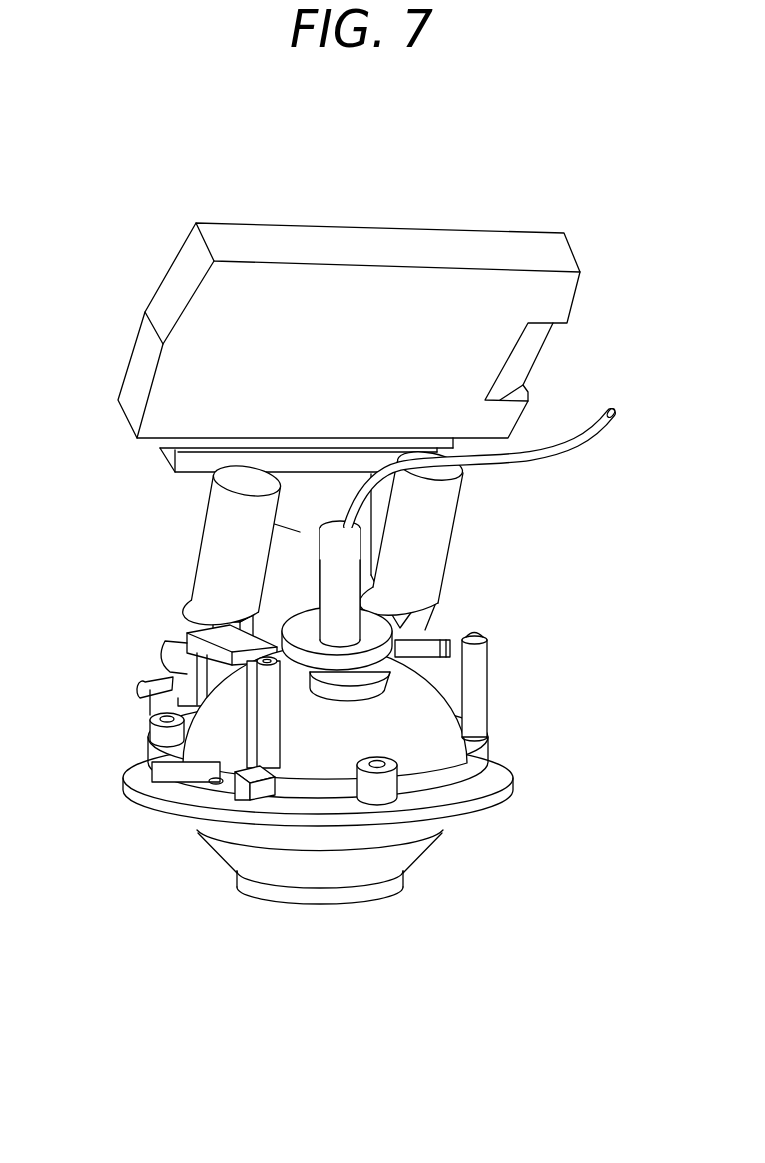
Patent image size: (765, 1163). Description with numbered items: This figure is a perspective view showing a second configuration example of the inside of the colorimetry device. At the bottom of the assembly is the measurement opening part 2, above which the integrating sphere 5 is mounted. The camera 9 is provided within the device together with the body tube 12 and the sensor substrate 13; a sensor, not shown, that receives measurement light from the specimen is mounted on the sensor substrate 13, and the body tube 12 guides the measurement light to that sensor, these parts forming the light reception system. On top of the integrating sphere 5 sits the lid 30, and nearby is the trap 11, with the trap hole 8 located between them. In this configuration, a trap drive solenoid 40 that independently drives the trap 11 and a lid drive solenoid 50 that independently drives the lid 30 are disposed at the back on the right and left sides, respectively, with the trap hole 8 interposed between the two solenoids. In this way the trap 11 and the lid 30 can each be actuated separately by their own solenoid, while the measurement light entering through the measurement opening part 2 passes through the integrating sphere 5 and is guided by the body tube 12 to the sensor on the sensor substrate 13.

The measurement opening part 2 is at (355, 907).
The integrating sphere 5 is at (420, 718).
The trap hole 8 is at (317, 692).
The camera 9 is at (380, 567).
The trap 11 is at (460, 672).
The body tube 12 is at (230, 533).
The sensor substrate 13 is at (395, 248).
The lid 30 is at (410, 623).
The trap drive solenoid 40 is at (433, 503).
The lid drive solenoid 50 is at (227, 568).